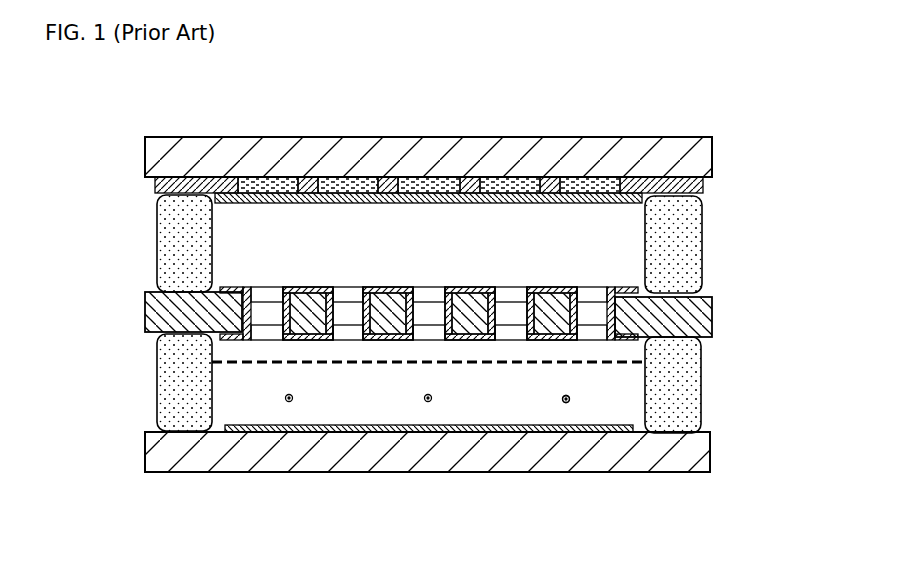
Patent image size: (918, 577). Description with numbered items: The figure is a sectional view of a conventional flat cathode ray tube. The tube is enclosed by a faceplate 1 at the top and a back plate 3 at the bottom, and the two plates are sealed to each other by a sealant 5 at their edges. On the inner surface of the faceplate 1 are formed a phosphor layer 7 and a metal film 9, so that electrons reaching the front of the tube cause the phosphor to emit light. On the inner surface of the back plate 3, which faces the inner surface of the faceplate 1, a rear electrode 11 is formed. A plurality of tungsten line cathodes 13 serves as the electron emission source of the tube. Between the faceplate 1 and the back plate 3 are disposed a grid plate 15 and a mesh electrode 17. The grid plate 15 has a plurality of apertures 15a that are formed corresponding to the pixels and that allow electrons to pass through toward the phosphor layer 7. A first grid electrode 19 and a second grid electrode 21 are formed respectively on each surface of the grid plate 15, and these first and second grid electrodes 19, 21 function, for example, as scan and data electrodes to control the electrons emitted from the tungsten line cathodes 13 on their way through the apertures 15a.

The faceplate 1 is at (363, 143).
The back plate 3 is at (368, 462).
The sealant 5 is at (162, 262).
The phosphor layer 7 is at (502, 185).
The metal film 9 is at (277, 195).
The rear electrode 11 is at (510, 435).
The tungsten line cathodes 13 is at (567, 404).
The grid plate 15 is at (714, 318).
The apertures 15a is at (346, 305).
The mesh electrode 17 is at (322, 362).
The first grid electrode 19 is at (472, 342).
The second grid electrode 21 is at (548, 290).